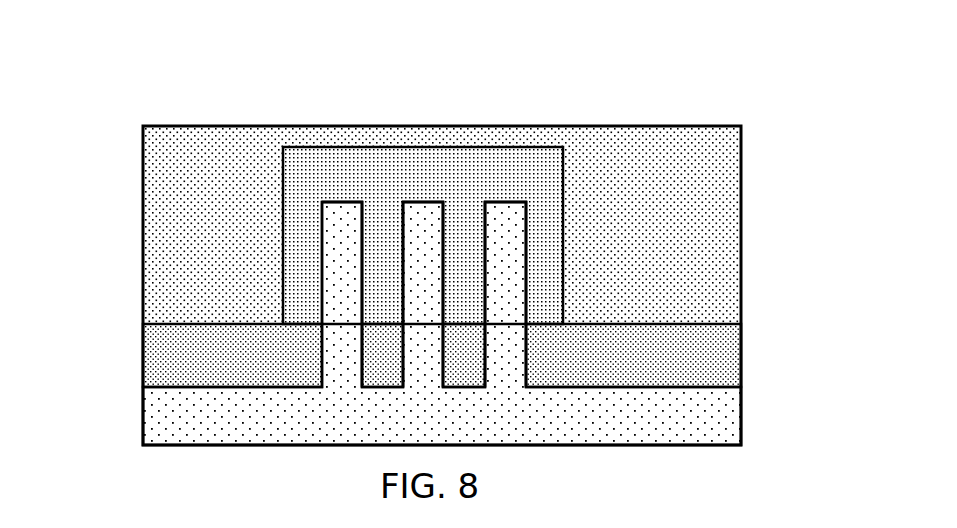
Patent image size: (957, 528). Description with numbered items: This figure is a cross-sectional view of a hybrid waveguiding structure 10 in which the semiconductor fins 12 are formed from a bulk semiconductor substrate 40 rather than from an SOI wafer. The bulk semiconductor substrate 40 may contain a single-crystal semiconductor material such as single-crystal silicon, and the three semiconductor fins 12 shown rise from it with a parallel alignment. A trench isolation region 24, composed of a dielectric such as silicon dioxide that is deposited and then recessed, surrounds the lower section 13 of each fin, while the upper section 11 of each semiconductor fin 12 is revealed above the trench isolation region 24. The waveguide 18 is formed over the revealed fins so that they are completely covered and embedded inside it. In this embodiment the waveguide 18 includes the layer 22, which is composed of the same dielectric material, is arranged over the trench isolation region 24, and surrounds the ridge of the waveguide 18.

The hybrid waveguiding structure 10 is at (162, 96).
The upper section 11 is at (848, 249).
The semiconductor fins 12 is at (334, 273).
The lower section 13 is at (824, 338).
The waveguide 18 is at (334, 180).
The layer 22 is at (712, 181).
The trench isolation region 24 is at (162, 367).
The bulk semiconductor substrate 40 is at (162, 423).